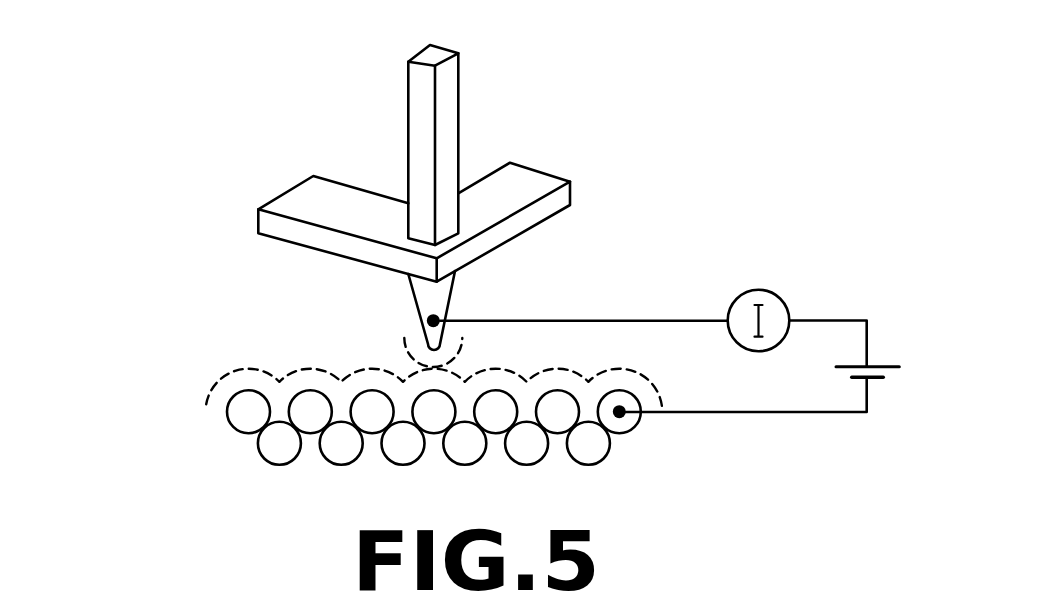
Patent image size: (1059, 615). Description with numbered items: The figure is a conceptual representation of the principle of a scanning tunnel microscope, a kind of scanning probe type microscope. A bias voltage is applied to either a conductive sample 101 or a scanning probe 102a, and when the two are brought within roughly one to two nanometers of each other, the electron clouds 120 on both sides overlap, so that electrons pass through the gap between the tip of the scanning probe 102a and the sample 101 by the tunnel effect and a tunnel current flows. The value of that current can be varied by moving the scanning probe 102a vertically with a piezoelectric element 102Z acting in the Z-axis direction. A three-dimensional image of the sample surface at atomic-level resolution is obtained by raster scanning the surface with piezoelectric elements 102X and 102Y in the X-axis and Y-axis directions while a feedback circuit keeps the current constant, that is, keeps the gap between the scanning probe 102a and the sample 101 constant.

The conductive sample 101 is at (247, 412).
The piezoelectric element for X axis 102X is at (522, 193).
The piezoelectric element for Y axis 102Y is at (302, 196).
The piezoelectric element for Z axis 102Z is at (448, 105).
The scanning probe 102a is at (420, 293).
The electron clouds 120 is at (567, 370).